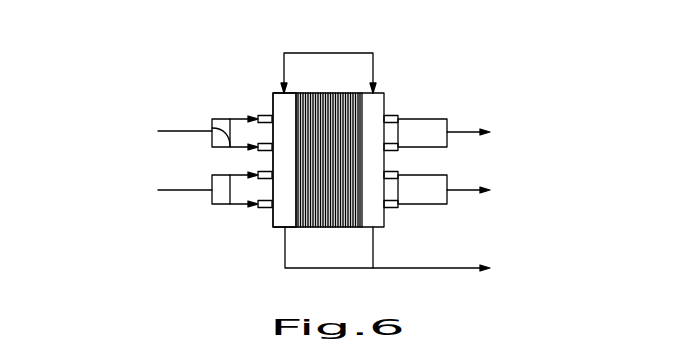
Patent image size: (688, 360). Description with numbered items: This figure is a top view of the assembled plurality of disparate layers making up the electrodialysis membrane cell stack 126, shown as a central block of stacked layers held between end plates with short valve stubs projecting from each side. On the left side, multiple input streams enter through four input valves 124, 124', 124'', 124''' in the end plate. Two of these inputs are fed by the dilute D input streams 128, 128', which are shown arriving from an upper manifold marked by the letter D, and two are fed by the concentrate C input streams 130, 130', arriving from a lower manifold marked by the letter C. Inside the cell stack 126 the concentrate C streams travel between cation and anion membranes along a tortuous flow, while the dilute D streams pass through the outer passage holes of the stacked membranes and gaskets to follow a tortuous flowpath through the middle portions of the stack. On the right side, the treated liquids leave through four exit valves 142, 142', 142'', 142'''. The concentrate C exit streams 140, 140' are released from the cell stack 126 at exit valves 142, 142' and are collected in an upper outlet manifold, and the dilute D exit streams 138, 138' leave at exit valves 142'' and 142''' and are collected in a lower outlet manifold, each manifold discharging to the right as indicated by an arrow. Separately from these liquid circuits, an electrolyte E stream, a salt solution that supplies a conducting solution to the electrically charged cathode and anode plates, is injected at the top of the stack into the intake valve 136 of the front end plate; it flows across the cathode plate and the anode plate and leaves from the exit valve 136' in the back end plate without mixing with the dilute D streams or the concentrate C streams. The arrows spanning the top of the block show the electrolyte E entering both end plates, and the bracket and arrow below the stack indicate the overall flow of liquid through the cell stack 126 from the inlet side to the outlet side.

The input valve 124 is at (250, 81).
The input valve 124' is at (214, 149).
The input valve 124'' is at (175, 152).
The input valve 124''' is at (216, 233).
The electrodialysis membrane cell stack 126 is at (305, 227).
The dilute D input stream 128 is at (202, 94).
The dilute D input stream 128' is at (182, 112).
The concentrate C input stream 130 is at (169, 183).
The concentrate C input stream 130' is at (171, 224).
The intake valve 136 is at (328, 118).
The exit valve 136' is at (252, 173).
The dilute D exit stream 138 is at (455, 201).
The dilute D exit stream 138' is at (454, 231).
The concentrate C exit stream 140 is at (461, 119).
The concentrate C exit stream 140' is at (493, 144).
The exit valve 142 is at (431, 96).
The exit valve 142' is at (464, 165).
The exit valve 142'' is at (479, 188).
The exit valve 142''' is at (405, 234).
The electrolyte stream E is at (328, 59).
The dilute stream D is at (176, 135).
The concentrate stream C is at (176, 190).